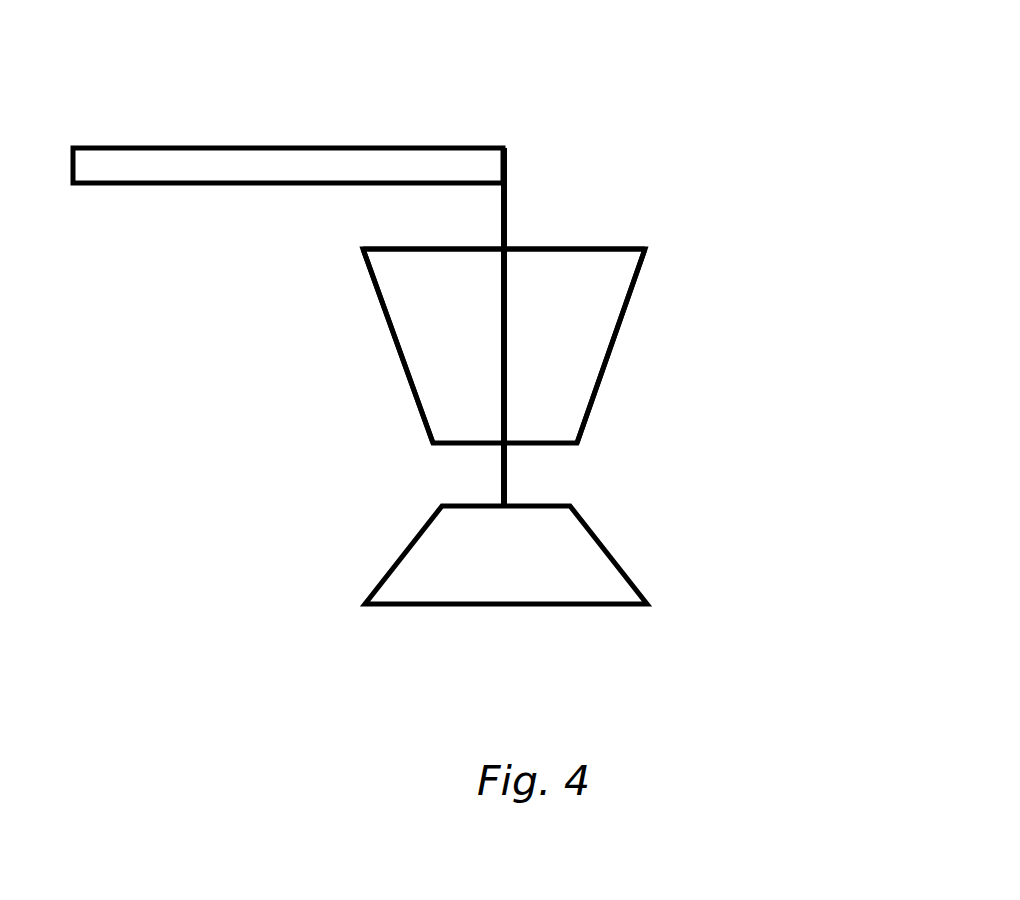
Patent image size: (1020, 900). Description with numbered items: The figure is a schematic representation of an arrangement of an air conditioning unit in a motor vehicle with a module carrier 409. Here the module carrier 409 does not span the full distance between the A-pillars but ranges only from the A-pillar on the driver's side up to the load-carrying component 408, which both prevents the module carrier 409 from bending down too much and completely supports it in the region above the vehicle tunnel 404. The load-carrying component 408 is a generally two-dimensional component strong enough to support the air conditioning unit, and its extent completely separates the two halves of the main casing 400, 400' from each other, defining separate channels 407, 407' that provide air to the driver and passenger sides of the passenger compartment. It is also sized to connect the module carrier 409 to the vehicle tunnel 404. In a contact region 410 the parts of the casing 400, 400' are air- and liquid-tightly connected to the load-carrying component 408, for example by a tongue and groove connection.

The main casing half 400 is at (692, 346).
The main casing half 400' is at (269, 346).
The vehicle tunnel 404 is at (587, 578).
The channel 407 is at (686, 346).
The channel 407' is at (270, 346).
The load-carrying component 408 is at (507, 209).
The module carrier 409 is at (185, 150).
The contact region 410 is at (500, 248).